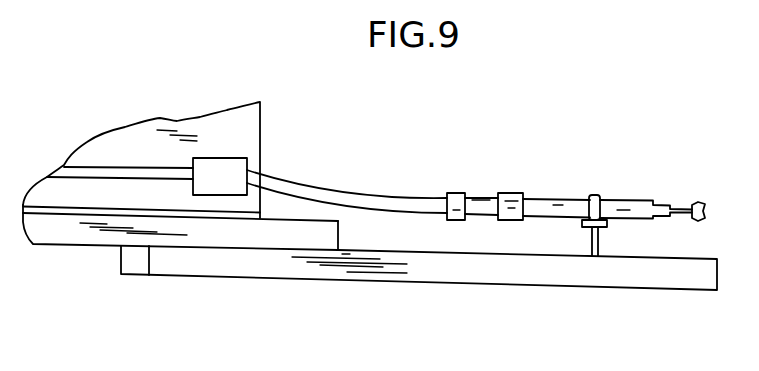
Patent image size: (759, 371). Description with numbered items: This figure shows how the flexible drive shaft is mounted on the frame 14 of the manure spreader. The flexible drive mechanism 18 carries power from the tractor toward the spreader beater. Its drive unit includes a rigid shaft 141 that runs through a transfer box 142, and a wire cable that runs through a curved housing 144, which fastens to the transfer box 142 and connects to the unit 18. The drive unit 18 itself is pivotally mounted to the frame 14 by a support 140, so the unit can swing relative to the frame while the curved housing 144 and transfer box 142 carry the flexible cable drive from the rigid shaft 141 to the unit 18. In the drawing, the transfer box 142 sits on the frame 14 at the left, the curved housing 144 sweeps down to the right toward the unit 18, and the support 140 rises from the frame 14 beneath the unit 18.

The frame 14 is at (457, 287).
The flexible drive mechanism 18 is at (536, 171).
The support 140 is at (598, 233).
The rigid shaft 141 is at (143, 167).
The transfer box 142 is at (227, 158).
The curved housing 144 is at (365, 192).